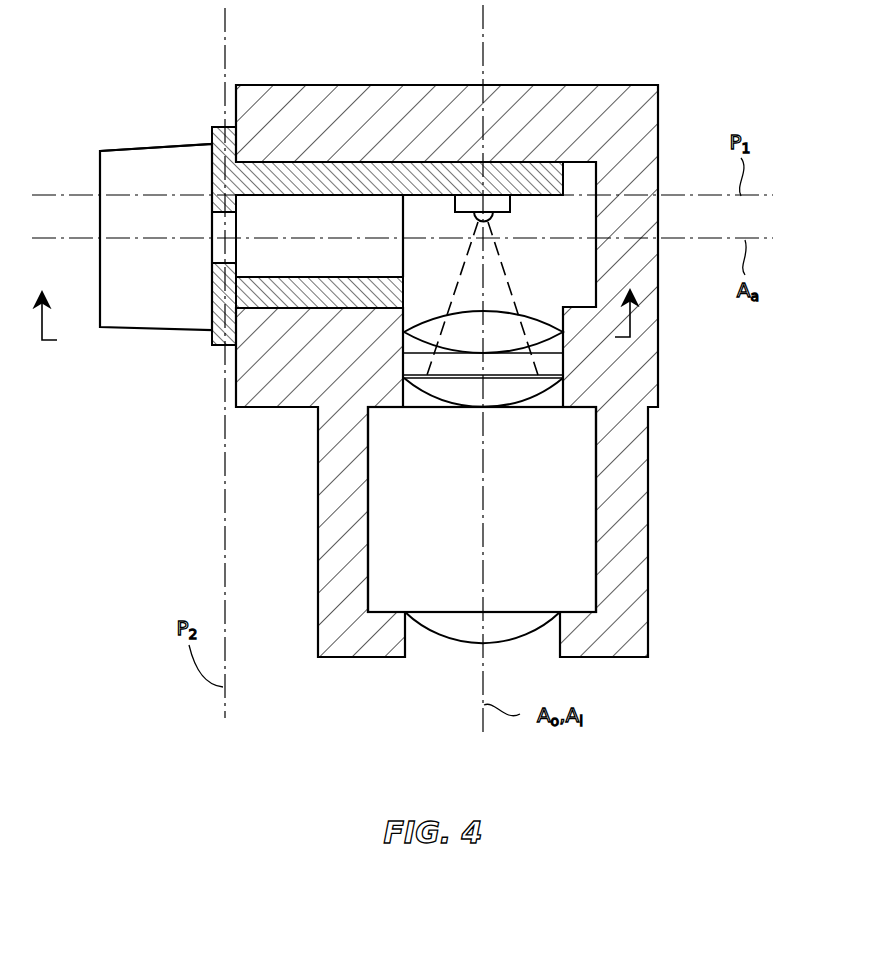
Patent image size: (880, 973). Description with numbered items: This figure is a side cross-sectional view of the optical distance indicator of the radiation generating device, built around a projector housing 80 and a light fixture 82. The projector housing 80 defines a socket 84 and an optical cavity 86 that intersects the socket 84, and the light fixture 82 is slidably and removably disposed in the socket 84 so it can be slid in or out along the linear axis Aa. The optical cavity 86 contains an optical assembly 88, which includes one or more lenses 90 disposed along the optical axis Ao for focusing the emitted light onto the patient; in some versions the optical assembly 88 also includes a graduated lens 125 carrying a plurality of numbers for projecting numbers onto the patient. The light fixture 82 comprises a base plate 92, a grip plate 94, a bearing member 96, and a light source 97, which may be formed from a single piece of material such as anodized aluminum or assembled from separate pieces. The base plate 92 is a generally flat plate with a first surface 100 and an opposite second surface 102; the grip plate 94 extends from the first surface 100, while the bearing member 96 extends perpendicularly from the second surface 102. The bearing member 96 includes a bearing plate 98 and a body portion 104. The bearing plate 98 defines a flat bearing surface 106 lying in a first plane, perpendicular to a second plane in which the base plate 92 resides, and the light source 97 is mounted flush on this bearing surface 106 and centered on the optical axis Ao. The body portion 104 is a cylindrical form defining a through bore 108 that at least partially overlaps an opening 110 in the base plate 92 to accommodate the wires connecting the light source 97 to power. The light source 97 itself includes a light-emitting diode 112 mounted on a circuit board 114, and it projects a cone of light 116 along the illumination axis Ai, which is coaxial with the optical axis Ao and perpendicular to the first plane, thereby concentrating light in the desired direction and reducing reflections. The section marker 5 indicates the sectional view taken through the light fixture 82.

The projector housing 80 is at (509, 80).
The light fixture 82 is at (152, 141).
The socket 84 is at (355, 172).
The optical cavity 86 is at (592, 510).
The optical assembly 88 is at (522, 411).
The lens 90 is at (494, 404).
The base plate 92 is at (212, 338).
The grip plate 94 is at (122, 147).
The bearing member 96 is at (417, 170).
The light source 97 is at (518, 208).
The bearing plate 98 is at (545, 178).
The first surface 100 is at (211, 130).
The second surface 102 is at (240, 140).
The body portion 104 is at (307, 298).
The bearing surface 106 is at (547, 194).
The through bore 108 is at (295, 202).
The opening 110 is at (217, 254).
The light-emitting-diode (LED) 112 is at (495, 218).
The circuit board 114 is at (463, 200).
The cone of light 116 is at (513, 328).
The graduated lens 125 is at (435, 327).
The section line 5 is at (336, 320).